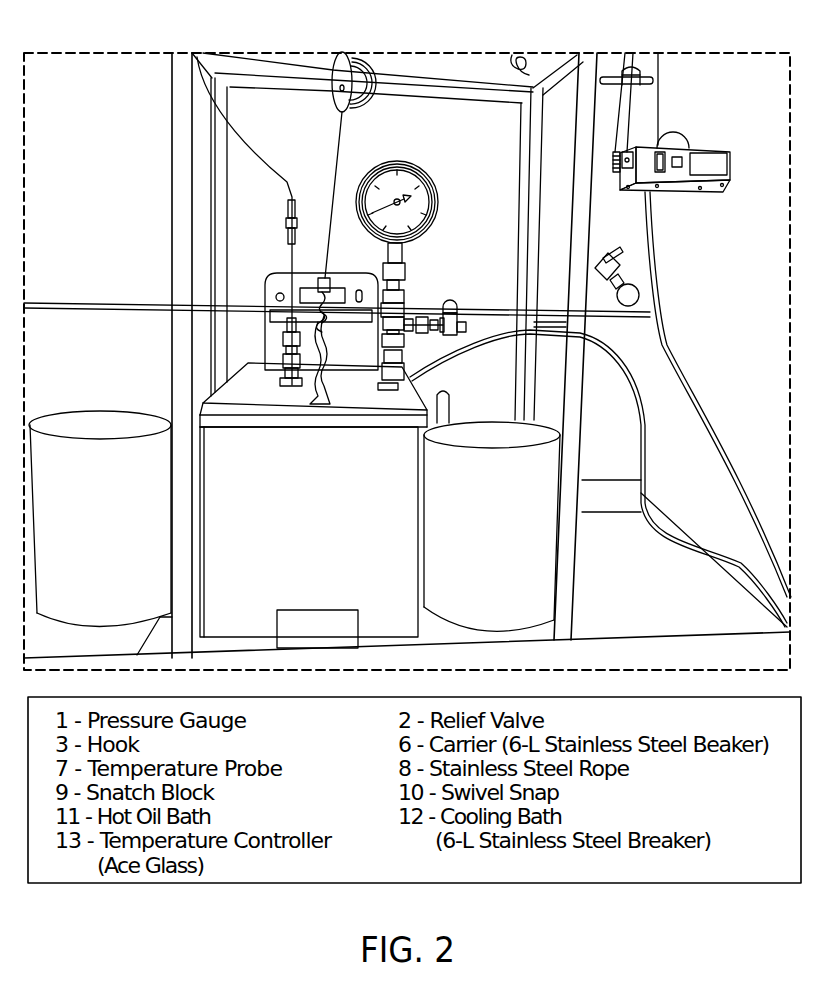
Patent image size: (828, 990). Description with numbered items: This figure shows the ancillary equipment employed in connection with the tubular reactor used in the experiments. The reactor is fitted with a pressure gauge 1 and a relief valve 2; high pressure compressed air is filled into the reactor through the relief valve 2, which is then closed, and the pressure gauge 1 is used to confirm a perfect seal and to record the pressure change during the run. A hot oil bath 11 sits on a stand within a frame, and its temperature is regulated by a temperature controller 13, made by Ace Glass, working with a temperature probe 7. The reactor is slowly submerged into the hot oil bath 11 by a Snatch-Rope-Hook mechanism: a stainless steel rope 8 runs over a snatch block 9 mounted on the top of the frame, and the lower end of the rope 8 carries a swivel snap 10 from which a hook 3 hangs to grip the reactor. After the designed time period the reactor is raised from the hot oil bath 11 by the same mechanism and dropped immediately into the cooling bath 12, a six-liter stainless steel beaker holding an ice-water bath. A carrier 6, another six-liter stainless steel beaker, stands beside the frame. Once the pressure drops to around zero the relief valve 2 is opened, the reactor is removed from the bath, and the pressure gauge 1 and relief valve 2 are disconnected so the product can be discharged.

The pressure gauge 1 is at (414, 257).
The relief valve 2 is at (455, 293).
The hook 3 is at (355, 385).
The carrier 6 is at (100, 499).
The temperature probe 7 is at (249, 221).
The stainless steel rope 8 is at (307, 186).
The snatch block 9 is at (328, 62).
The swivel snap 10 is at (321, 305).
The hot oil bath 11 is at (307, 524).
The cooling bath 12 is at (524, 511).
The temperature controller 13 is at (690, 146).